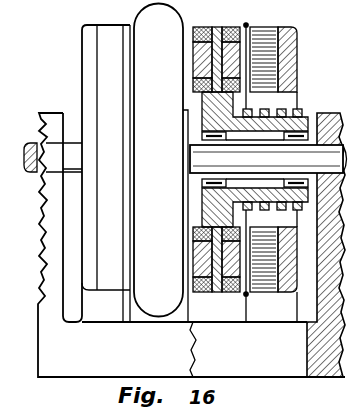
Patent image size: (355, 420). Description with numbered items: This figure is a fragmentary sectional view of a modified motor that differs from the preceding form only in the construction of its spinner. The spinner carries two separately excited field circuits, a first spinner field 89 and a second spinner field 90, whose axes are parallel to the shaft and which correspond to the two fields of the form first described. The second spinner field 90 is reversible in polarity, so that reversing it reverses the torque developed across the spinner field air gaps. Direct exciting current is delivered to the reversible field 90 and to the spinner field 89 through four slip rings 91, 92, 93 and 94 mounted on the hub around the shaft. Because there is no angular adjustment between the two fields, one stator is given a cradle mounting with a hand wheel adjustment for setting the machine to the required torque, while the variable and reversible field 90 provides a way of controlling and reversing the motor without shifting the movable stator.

The spinner field 89 is at (206, 26).
The spinner field 90 is at (237, 25).
The slip ring 91 is at (248, 109).
The slip ring 92 is at (264, 109).
The slip ring 93 is at (283, 109).
The slip ring 94 is at (299, 109).